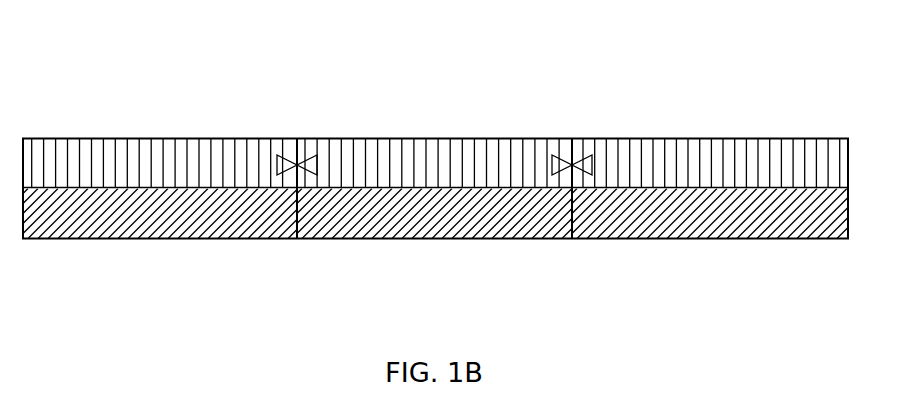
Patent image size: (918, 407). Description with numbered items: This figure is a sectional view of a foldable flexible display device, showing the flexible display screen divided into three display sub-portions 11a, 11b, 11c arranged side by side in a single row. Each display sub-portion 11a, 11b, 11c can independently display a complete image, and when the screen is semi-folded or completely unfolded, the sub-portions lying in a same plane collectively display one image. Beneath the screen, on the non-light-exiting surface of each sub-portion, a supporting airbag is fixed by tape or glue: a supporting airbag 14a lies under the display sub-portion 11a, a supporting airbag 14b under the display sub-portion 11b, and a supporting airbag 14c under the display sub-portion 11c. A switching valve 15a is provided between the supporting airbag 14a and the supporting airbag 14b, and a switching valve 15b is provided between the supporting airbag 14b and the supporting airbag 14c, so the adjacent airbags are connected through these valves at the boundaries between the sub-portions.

The display sub-portion 11a is at (101, 218).
The display sub-portion 11b is at (437, 220).
The display sub-portion 11c is at (677, 213).
The supporting airbag 14a is at (117, 157).
The supporting airbag 14b is at (410, 157).
The supporting airbag 14c is at (665, 170).
The switching valve 15a is at (307, 157).
The switching valve 15b is at (574, 151).